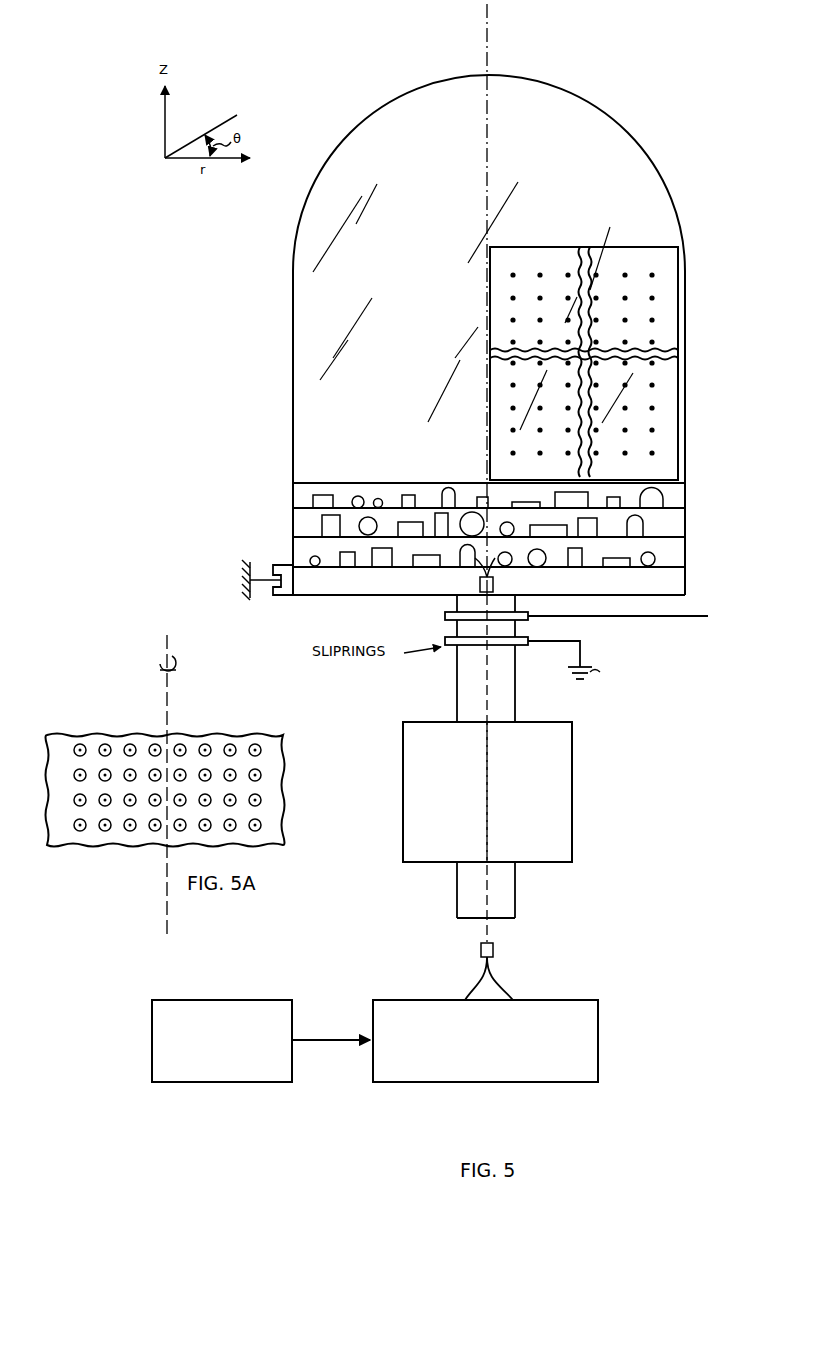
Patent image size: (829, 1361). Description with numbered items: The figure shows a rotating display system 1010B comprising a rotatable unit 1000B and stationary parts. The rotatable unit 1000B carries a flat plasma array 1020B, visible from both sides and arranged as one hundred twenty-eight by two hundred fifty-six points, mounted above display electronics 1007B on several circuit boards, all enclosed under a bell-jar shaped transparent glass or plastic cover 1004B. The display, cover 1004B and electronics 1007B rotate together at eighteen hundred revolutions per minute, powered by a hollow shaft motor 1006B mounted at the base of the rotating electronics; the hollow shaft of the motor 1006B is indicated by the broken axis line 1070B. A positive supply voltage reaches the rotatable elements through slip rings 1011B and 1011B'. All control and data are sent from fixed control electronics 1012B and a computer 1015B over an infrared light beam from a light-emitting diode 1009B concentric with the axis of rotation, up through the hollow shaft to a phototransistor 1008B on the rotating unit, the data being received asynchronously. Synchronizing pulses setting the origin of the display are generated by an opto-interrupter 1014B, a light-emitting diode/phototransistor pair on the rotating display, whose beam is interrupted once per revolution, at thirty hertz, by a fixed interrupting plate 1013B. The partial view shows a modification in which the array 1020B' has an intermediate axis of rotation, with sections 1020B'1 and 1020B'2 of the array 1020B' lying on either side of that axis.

In FIG. 5, the transparent cover 1004B is at (297, 292).
In FIG. 5, the flat array 1020B is at (627, 363).
In FIG. 5, the display electronics 1007B is at (675, 567).
In FIG. 5, the rotatable unit 1000B is at (417, 599).
In FIG. 5, the phototransistor 1008B is at (478, 585).
In FIG. 5, the opto-interrupter 1014B is at (283, 565).
In FIG. 5, the fixed interrupting plate 1013B is at (263, 582).
In FIG. 5, the slip ring 1011B is at (592, 624).
In FIG. 5, the slip ring 1011B' is at (528, 669).
In FIG. 5, the hollow shaft motor 1006B is at (572, 810).
In FIG. 5, the rotation axis / shaft 1070B is at (487, 776).
In FIG. 5, the light-emitting diode 1009B is at (479, 949).
In FIG. 5, the computer 1015B is at (278, 998).
In FIG. 5, the fixed control electronics 1012B is at (598, 1042).
In FIG. 5, the system 1010B is at (322, 1120).
In FIG. 5A, the array 1020B' is at (200, 790).
In FIG. 5A, the array section 1020B'1 is at (54, 719).
In FIG. 5A, the array section 1020B'2 is at (236, 719).